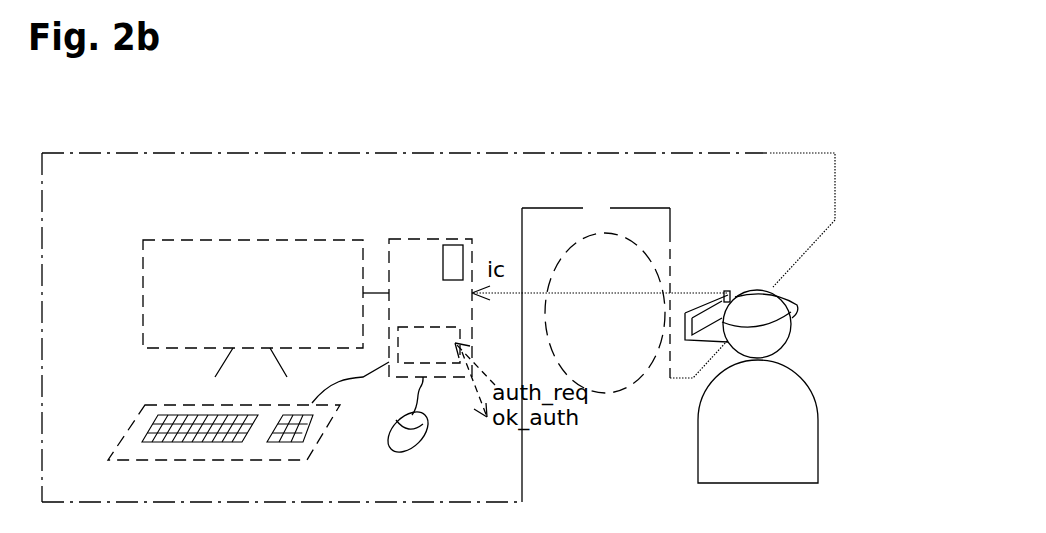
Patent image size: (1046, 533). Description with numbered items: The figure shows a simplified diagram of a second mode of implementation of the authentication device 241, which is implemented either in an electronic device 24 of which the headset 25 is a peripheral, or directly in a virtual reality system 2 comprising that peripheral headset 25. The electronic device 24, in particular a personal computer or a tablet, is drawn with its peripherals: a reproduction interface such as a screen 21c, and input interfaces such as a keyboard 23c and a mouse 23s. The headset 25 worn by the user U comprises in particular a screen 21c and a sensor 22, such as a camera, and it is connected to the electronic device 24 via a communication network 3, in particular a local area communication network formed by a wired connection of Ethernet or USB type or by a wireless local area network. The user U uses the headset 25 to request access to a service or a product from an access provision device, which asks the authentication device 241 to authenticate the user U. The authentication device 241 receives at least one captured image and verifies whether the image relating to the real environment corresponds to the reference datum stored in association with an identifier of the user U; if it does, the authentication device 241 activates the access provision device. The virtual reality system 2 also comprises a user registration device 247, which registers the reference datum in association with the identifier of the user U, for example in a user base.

The virtual reality system 2 is at (607, 197).
The communication network 3 is at (616, 358).
The screen 21c is at (712, 320).
The sensor 22 is at (727, 296).
The keyboard 23c is at (123, 438).
The mouse 23s is at (417, 432).
The electronic device 24 is at (430, 308).
The authentication device 241 is at (429, 345).
The user registration device 247 is at (455, 253).
The virtual reality headset 25 is at (790, 203).
The user U is at (758, 386).